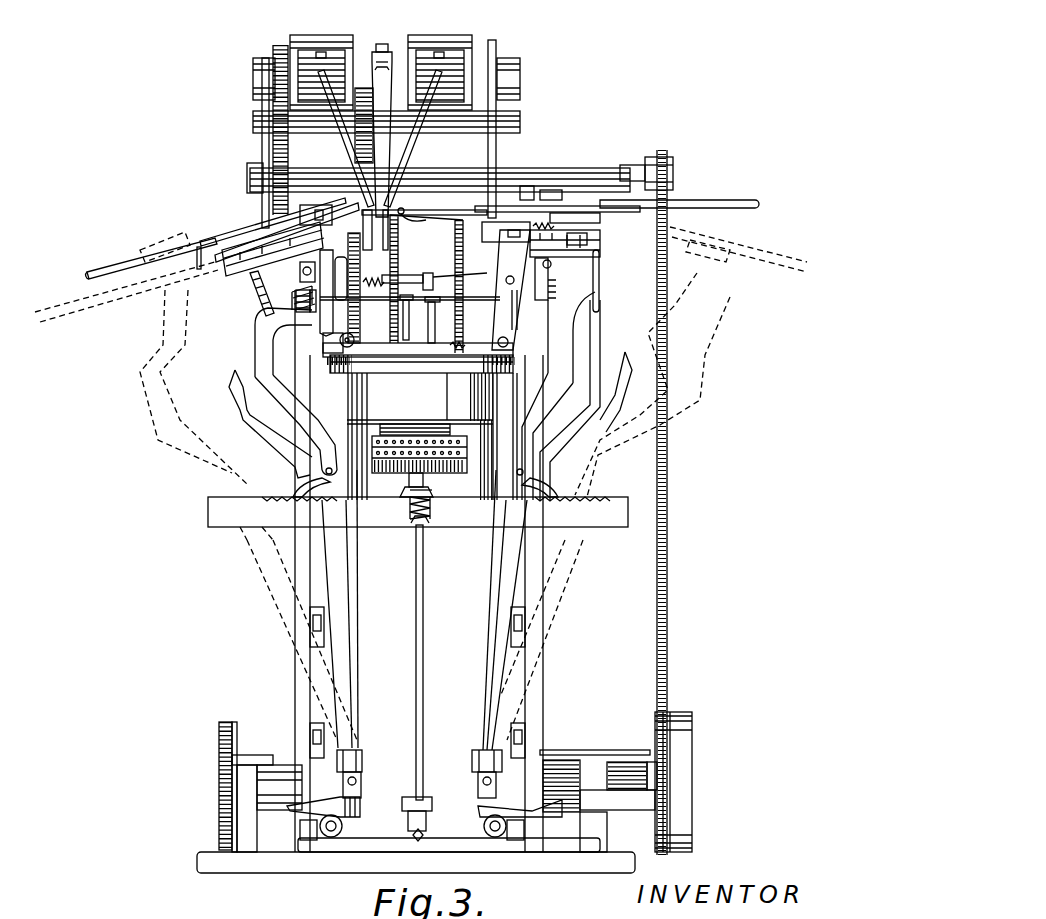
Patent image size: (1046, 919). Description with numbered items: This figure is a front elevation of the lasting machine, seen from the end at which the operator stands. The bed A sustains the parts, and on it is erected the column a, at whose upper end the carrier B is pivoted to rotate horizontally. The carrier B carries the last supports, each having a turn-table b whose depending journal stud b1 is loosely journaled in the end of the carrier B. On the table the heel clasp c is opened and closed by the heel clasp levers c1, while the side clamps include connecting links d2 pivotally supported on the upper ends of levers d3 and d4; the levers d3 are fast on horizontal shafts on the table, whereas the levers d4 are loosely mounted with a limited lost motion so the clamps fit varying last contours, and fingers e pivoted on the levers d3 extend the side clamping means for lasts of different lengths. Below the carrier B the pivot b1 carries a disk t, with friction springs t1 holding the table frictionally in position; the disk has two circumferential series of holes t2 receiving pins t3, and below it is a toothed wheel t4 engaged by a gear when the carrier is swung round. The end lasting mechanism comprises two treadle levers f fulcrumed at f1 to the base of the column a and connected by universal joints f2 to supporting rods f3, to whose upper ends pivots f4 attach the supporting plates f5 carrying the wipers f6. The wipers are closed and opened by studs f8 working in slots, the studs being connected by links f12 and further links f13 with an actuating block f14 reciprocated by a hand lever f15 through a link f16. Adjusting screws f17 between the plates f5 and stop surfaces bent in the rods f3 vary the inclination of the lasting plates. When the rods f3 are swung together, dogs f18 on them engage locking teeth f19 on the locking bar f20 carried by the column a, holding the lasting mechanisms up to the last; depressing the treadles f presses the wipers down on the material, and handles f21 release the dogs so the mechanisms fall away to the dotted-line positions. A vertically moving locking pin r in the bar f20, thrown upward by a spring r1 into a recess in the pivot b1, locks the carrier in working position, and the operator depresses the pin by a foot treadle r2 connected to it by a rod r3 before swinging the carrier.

The bed A is at (325, 863).
The column a is at (393, 639).
The carrier B is at (487, 397).
The movable base b is at (352, 358).
The depending pivot or journal stud b1 is at (407, 422).
The arm c is at (425, 395).
The heel clasp levers c1 is at (517, 323).
The connecting links d2 is at (452, 222).
The levers d3 is at (503, 236).
The levers d4 is at (432, 278).
The fingers e is at (412, 205).
The treadle levers f is at (375, 788).
The fulcrum f1 is at (507, 833).
The universal joints f2 is at (360, 757).
The supporting rods f3 is at (335, 593).
The pivots f4 is at (557, 270).
The supporting plates f5 is at (250, 275).
The wipers f6 is at (485, 208).
The stud f8 is at (548, 198).
The links f12 is at (266, 304).
The links f13 is at (575, 206).
The actuating block f14 is at (228, 222).
The hand lever f15 is at (723, 202).
The link f16 is at (200, 269).
The adjusting screws f17 is at (600, 316).
The dogs f18 is at (303, 478).
The locking teeth f19 is at (302, 495).
The locking bar f20 is at (225, 512).
The handles f21 is at (235, 390).
The locking pin r is at (417, 487).
The spring r1 is at (430, 507).
The foot treadle r2 is at (437, 788).
The rod r3 is at (420, 677).
The disk t is at (470, 445).
The friction springs t1 is at (393, 433).
The holes t2 is at (378, 450).
The pins t3 is at (462, 440).
The toothed wheel t4 is at (465, 465).